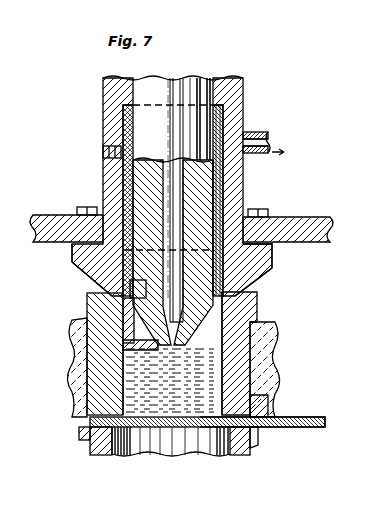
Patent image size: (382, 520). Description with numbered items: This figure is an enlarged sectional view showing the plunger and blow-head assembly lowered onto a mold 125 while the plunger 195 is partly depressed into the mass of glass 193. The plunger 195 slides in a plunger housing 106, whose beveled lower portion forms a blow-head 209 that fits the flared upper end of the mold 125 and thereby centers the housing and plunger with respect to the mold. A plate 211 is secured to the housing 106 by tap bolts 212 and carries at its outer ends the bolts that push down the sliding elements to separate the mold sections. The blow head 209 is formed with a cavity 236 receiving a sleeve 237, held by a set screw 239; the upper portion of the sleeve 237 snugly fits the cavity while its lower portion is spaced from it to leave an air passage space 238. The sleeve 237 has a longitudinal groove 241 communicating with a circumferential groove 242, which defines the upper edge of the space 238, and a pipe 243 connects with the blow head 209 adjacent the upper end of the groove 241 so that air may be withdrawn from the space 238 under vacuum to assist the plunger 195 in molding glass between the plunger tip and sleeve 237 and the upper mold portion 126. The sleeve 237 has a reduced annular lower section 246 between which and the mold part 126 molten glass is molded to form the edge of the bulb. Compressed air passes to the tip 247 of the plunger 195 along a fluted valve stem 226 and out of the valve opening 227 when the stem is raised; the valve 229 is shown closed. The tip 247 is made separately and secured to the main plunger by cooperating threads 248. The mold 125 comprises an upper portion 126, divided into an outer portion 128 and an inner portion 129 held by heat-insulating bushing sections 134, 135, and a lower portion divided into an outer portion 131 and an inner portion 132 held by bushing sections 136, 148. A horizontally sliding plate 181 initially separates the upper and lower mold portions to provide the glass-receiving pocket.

The plunger housing 106 is at (101, 110).
The plunger 195 is at (205, 78).
The sleeve 237 is at (243, 108).
The pipe 243 is at (266, 134).
The set screw 239 is at (103, 152).
The longitudinal groove 241 is at (224, 178).
The cavity 236 is at (223, 200).
The tap bolts 212 is at (85, 207).
The plate 211 is at (331, 228).
The air passage space 238 is at (103, 268).
The circumferential groove 242 is at (250, 250).
The blow-head 209 is at (256, 276).
The valve stem 226 is at (87, 297).
The outer portion of upper mold portion 128 is at (130, 312).
The reduced annular lower section 246 is at (123, 342).
The upper mold portion 126 is at (257, 310).
The threads 248 is at (222, 340).
The valve 229 is at (160, 340).
The bushing section 135 is at (266, 368).
The plunger tip 247 is at (122, 382).
The bushing section 134 is at (76, 403).
The inner portion of upper mold portion 129 is at (262, 408).
The mass of glass 193 is at (93, 419).
The sliding plate 181 is at (308, 428).
The bushing section 136 is at (84, 440).
The outer portion of lower mold portion 131 is at (98, 455).
The mold 125 is at (125, 471).
The valve opening 227 is at (172, 348).
The inner portion of lower mold portion 132 is at (238, 455).
The bushing section 148 is at (256, 446).